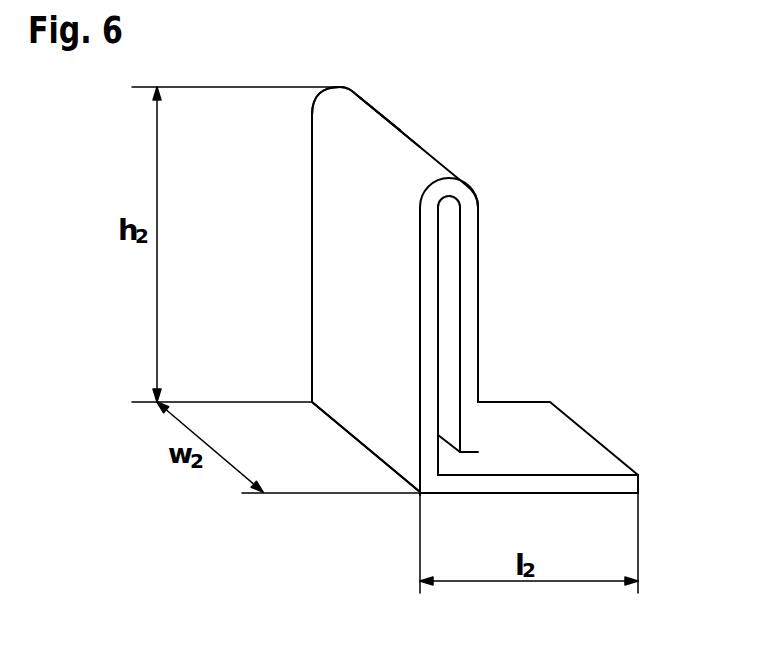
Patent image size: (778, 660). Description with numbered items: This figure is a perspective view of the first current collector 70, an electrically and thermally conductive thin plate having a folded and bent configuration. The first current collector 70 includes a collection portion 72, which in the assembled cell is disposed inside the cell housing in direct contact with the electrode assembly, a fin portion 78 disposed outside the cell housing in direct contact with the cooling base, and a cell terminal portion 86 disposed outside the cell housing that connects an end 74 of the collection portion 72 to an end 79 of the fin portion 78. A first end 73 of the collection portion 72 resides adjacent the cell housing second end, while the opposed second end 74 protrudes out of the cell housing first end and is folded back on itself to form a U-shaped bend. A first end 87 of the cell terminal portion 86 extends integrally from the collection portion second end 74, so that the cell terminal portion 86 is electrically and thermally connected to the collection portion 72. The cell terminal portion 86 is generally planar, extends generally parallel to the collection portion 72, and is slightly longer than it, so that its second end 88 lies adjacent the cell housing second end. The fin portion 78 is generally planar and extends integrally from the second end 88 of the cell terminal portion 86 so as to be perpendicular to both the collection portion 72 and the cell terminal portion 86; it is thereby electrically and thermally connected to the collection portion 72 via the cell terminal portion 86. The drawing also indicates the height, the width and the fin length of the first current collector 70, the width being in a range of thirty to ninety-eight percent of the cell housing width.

The first current collector 70 is at (388, 94).
The collection portion 72 is at (468, 322).
The first end of the collection portion 73 is at (468, 428).
The second end of the collection portion 74 is at (413, 158).
The fin portion 78 is at (560, 483).
The end of the fin portion 79 is at (425, 482).
The cell terminal portion 86 is at (350, 268).
The first end of the cell terminal portion 87 is at (348, 147).
The second end of the cell terminal portion 88 is at (358, 413).